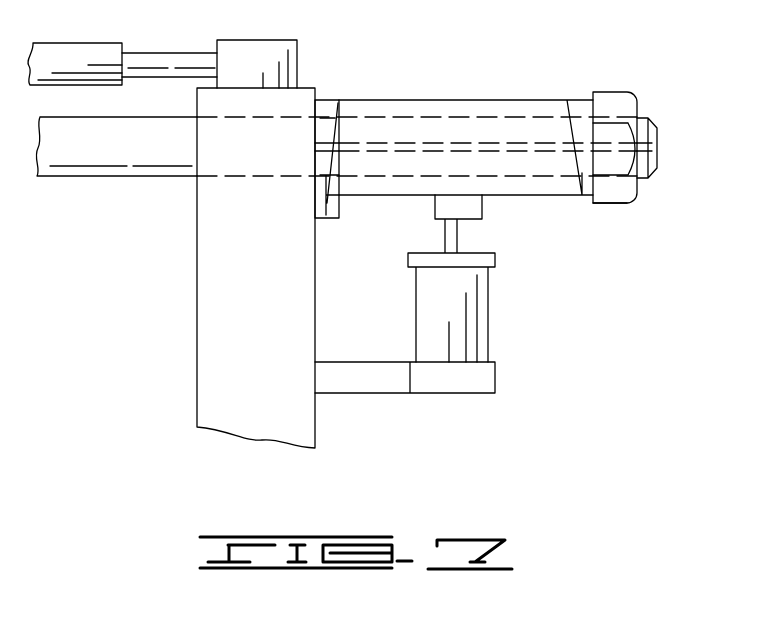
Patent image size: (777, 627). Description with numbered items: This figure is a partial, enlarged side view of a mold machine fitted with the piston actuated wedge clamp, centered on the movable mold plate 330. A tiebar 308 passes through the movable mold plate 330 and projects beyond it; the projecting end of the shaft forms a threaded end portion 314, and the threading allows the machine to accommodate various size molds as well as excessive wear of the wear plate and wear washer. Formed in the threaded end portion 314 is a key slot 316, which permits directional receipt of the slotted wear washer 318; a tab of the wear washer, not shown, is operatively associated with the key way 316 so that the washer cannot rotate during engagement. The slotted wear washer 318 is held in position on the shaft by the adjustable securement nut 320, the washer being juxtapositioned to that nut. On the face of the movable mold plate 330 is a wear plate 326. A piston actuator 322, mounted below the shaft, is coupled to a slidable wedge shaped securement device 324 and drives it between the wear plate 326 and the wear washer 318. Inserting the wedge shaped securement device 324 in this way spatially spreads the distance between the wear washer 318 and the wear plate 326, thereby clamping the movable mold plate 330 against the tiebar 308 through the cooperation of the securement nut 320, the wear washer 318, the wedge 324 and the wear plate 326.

The tiebar 308 is at (392, 185).
The threaded end portion 314 is at (649, 119).
The key slot 316 is at (650, 147).
The slotted wear washer 318 is at (578, 98).
The adjustable securement nut 320 is at (603, 205).
The piston actuator 322 is at (490, 313).
The wedge shaped securement device 324 is at (433, 100).
The wear plate 326 is at (328, 98).
The movable mold plate 330 is at (253, 424).